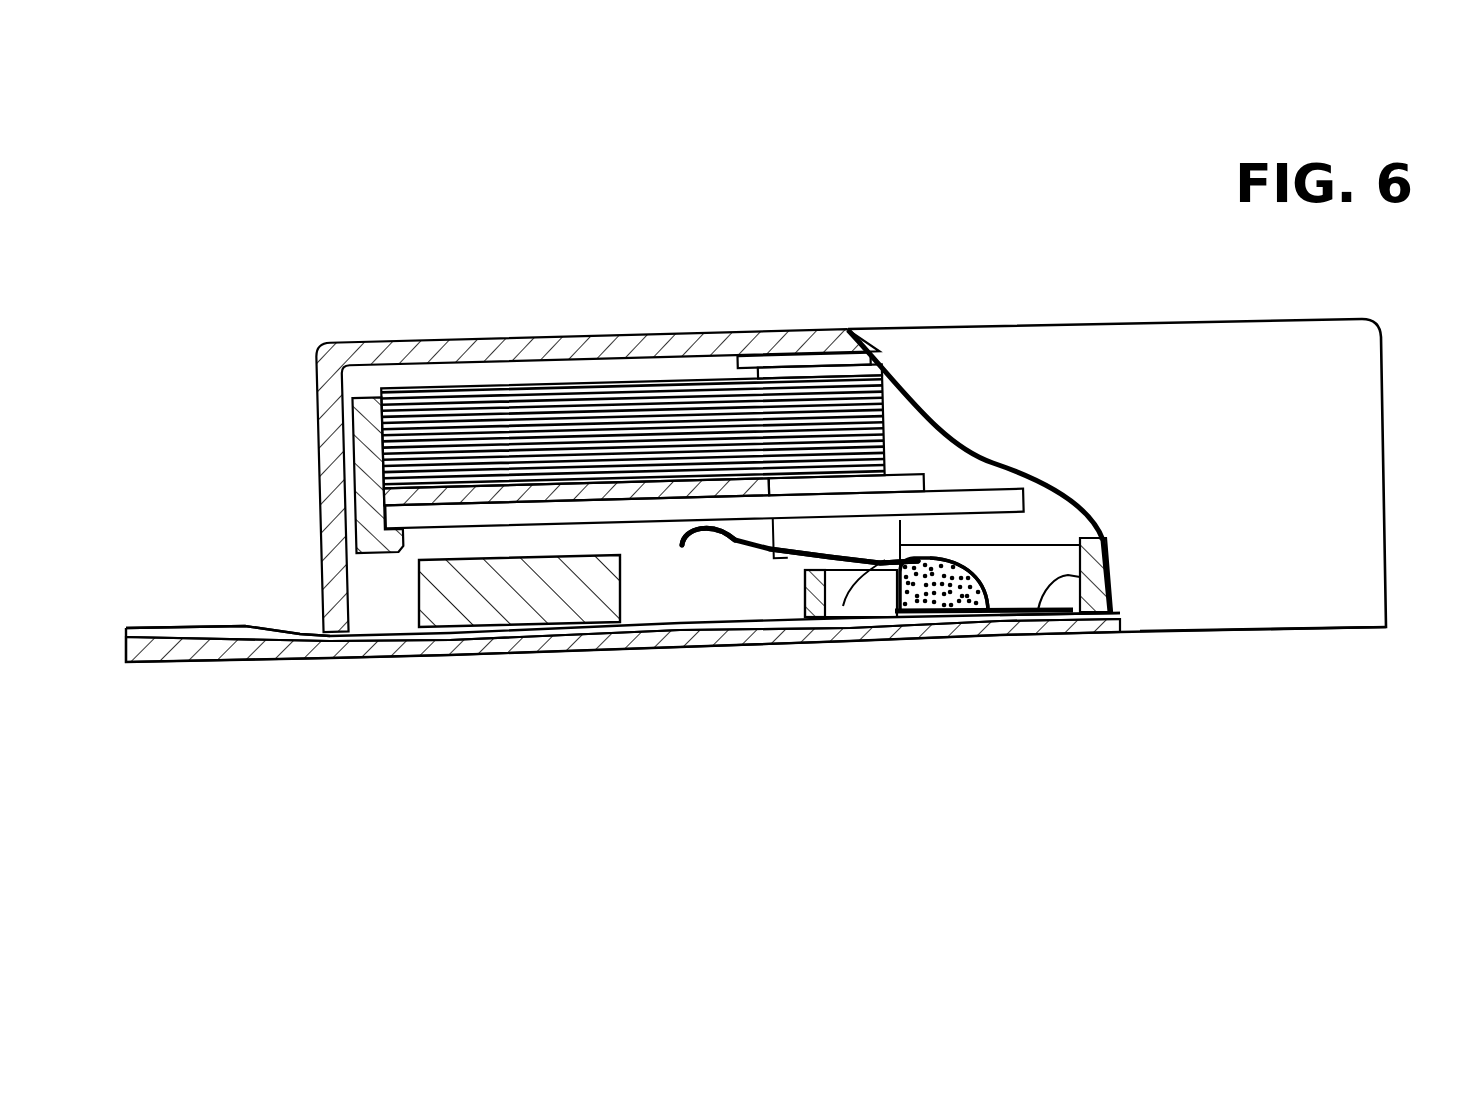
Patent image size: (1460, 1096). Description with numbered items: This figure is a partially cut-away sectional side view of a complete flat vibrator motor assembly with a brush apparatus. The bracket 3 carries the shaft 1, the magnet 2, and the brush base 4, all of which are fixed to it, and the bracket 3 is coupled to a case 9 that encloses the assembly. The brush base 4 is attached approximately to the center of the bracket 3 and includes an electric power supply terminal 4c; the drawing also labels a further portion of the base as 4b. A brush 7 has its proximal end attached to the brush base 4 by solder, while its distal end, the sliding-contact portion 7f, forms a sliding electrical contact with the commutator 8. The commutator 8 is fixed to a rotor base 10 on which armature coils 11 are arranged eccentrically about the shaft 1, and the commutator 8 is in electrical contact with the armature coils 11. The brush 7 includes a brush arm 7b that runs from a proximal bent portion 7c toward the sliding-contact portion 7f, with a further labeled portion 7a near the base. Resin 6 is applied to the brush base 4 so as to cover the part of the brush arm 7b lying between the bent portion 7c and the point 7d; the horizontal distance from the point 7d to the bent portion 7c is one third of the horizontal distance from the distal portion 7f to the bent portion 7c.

The shaft 1 is at (843, 580).
The magnet 2 is at (555, 600).
The bracket 3 is at (462, 635).
The brush base 4 is at (395, 641).
The base plate portion 4b is at (1021, 630).
The electric power supply terminal 4c is at (183, 622).
The resin 6 is at (937, 595).
The brush 7 is at (685, 555).
The fixed portion of spring 7a is at (1113, 613).
The brush arm 7b is at (928, 557).
The bent portion 7c is at (975, 618).
The point 7d is at (920, 553).
The sliding-contact portion 7f is at (708, 527).
The commutator 8 is at (672, 523).
The case 9 is at (317, 363).
The rotor base 10 is at (362, 417).
The armature coils 11 is at (530, 427).